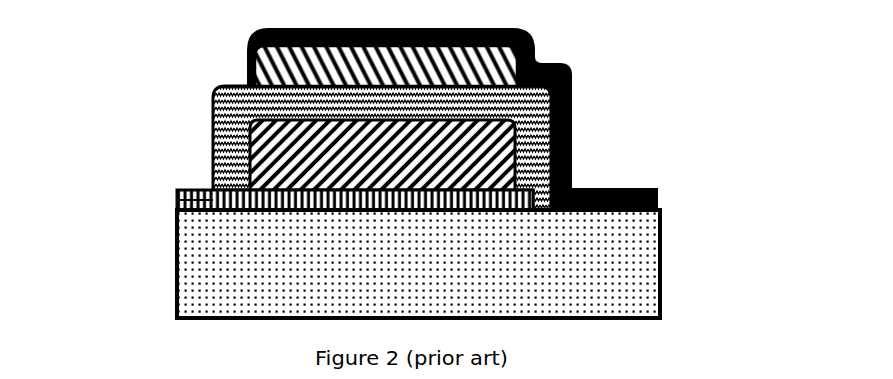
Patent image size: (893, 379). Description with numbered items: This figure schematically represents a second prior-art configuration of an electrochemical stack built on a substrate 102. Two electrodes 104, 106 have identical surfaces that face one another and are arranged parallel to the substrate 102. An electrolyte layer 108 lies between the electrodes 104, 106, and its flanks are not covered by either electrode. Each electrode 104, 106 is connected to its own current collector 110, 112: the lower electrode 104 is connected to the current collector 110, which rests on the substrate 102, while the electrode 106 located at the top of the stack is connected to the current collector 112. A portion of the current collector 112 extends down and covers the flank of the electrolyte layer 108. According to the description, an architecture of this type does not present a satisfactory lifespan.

The substrate 102 is at (552, 278).
The electrode 104 is at (312, 161).
The electrode 106 is at (265, 75).
The electrolyte layer 108 is at (213, 118).
The current collector 110 is at (177, 204).
The current collector 112 is at (575, 97).